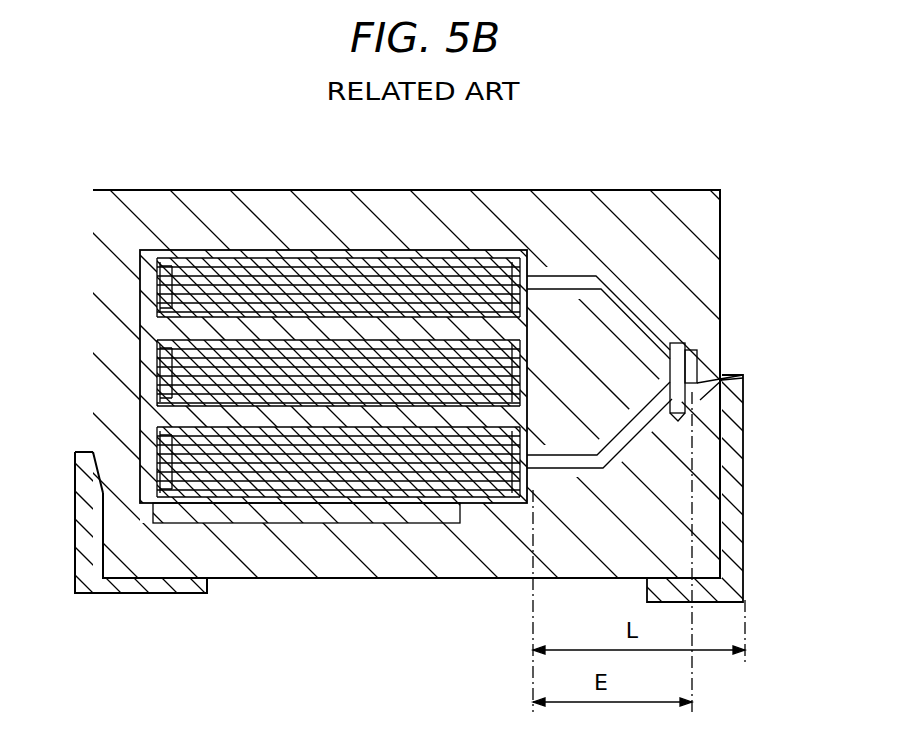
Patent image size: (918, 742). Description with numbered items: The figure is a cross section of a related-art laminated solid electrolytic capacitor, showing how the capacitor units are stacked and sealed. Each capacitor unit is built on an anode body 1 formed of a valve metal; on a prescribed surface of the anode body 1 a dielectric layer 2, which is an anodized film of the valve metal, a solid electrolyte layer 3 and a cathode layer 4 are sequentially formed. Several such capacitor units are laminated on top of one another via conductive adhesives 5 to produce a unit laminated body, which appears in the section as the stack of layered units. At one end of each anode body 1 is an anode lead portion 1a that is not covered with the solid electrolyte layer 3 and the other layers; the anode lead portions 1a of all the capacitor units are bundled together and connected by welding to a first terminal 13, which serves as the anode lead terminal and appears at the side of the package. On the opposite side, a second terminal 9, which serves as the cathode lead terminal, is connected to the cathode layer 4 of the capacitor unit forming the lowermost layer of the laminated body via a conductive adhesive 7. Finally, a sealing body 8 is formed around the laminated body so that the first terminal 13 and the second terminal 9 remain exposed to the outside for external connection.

The anode body 1 is at (380, 247).
The anode lead portion 1a is at (590, 265).
The dielectric layer 2 is at (317, 247).
The solid electrolyte layer 3 is at (250, 247).
The cathode layer 4 is at (217, 247).
The conductive adhesive 5 is at (470, 247).
The conductive adhesive 7 is at (487, 500).
The sealing body 8 is at (567, 217).
The second terminal 9 is at (80, 490).
The first terminal 13 is at (738, 460).